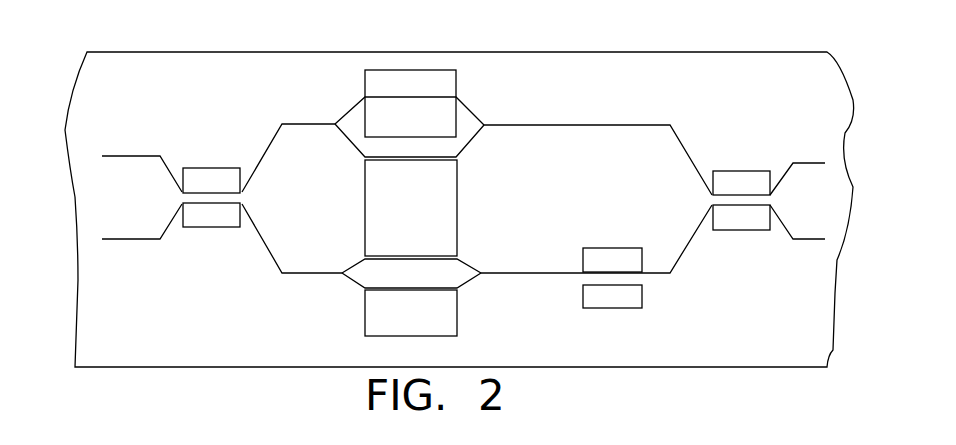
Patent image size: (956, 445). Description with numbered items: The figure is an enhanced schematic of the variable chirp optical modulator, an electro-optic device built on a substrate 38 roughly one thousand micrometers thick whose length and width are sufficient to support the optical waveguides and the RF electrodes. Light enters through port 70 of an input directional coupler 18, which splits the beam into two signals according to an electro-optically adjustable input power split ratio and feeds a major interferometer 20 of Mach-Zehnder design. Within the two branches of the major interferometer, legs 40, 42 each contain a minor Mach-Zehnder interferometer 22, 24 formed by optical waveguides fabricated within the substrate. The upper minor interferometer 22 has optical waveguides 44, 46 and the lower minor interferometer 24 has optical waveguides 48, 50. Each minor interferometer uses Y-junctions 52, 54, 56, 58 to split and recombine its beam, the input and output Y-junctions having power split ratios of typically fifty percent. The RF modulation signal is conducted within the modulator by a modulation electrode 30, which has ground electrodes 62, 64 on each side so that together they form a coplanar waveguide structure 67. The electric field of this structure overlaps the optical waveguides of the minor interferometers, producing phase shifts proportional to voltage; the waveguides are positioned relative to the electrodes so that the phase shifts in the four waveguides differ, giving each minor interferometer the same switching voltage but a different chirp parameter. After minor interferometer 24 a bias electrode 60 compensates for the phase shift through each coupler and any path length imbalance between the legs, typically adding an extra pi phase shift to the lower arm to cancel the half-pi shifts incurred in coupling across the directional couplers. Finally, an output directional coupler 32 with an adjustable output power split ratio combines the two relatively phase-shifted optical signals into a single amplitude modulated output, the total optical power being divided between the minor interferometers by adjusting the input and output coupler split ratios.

The Coplanar Waveguide (CPW) structure 67 is at (353, 48).
The substrate 38 is at (153, 345).
The port 70 is at (170, 198).
The input directional coupler 18 is at (210, 173).
The leg 40 is at (607, 105).
The major interferometer 20 is at (273, 283).
The leg 42 is at (685, 275).
The minor interferometer 22 is at (468, 85).
The minor interferometer 24 is at (470, 305).
The optical waveguide 44 is at (353, 105).
The optical waveguide 46 is at (470, 142).
The optical waveguide 48 is at (462, 262).
The optical waveguide 50 is at (352, 281).
The Y-junction 52 is at (332, 128).
The Y-junction 54 is at (483, 124).
The Y-junction 56 is at (342, 265).
The Y-junction 58 is at (483, 277).
The ground electrode 62 is at (420, 82).
The ground electrode 64 is at (402, 327).
The modulation electrode 30 is at (375, 195).
The bias electrode 60 is at (602, 248).
The output directional coupler 32 is at (733, 170).